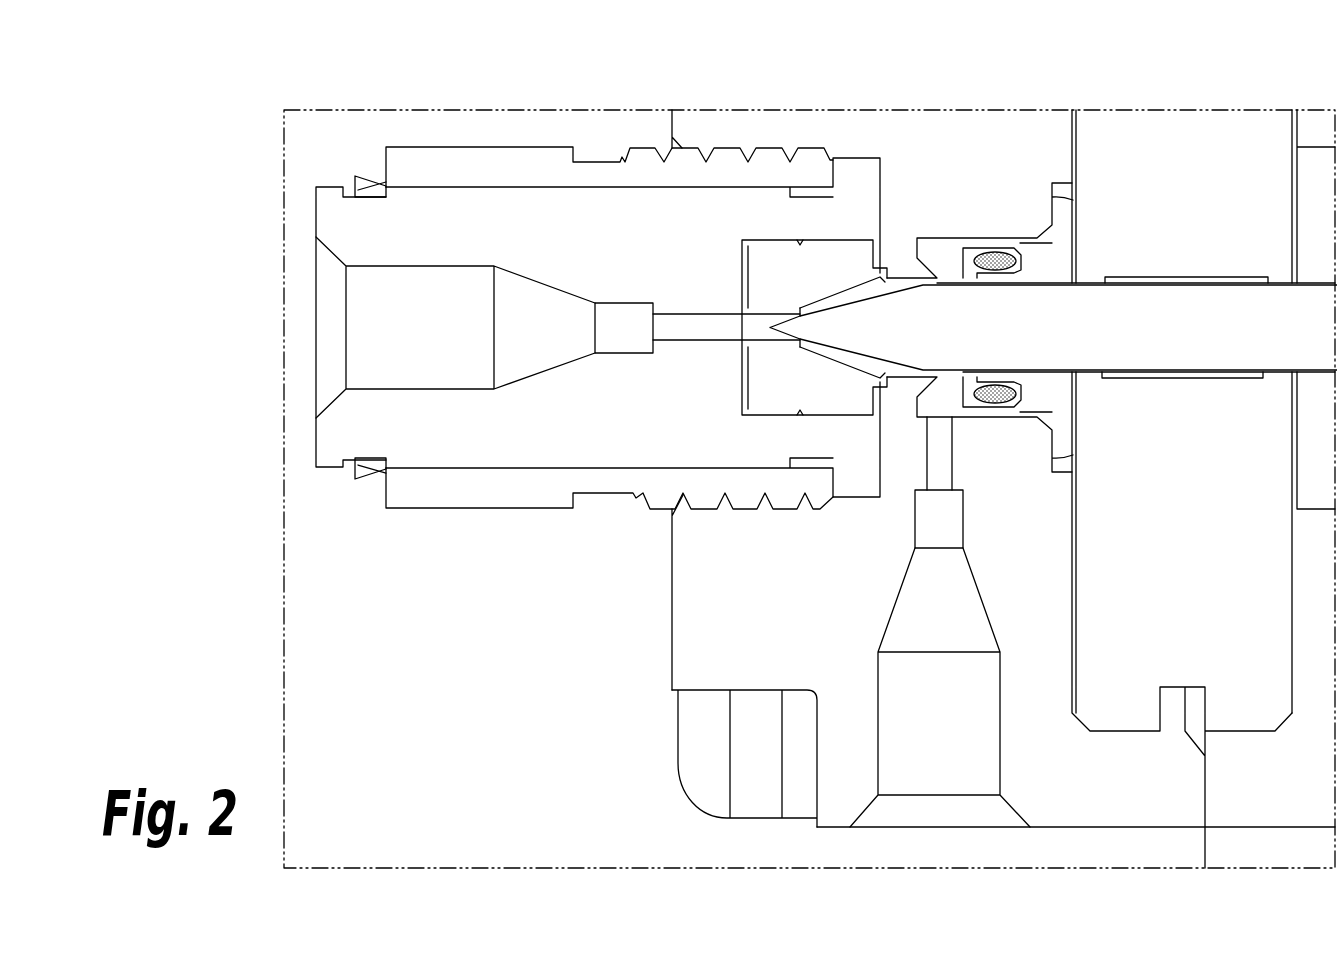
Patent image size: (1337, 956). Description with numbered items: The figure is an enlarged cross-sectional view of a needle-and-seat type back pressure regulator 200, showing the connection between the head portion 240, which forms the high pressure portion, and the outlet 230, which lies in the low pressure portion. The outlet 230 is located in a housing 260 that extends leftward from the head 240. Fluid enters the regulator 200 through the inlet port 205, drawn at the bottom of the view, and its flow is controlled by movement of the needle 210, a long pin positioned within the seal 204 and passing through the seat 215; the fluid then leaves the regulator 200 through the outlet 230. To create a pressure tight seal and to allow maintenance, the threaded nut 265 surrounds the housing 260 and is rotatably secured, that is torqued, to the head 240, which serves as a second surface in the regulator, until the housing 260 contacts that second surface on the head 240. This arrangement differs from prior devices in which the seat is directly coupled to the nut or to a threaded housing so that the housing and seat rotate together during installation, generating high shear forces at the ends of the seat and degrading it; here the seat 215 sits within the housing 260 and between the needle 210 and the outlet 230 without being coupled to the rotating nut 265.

The back pressure regulator 200 is at (873, 93).
The seal 204 is at (1045, 398).
The inlet port 205 is at (960, 822).
The needle 210 is at (1070, 343).
The seat 215 is at (813, 283).
The outlet 230 is at (442, 342).
The head portion 240 is at (1076, 489).
The housing 260 is at (625, 248).
The nut 265 is at (485, 178).